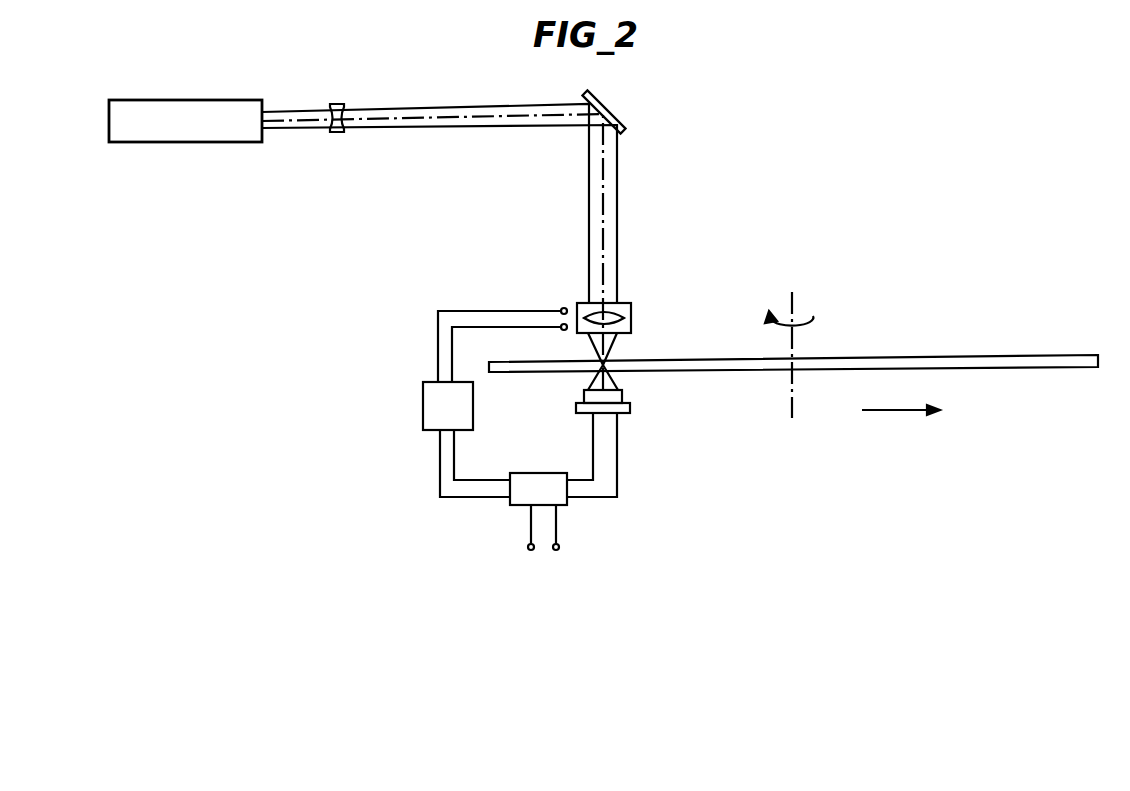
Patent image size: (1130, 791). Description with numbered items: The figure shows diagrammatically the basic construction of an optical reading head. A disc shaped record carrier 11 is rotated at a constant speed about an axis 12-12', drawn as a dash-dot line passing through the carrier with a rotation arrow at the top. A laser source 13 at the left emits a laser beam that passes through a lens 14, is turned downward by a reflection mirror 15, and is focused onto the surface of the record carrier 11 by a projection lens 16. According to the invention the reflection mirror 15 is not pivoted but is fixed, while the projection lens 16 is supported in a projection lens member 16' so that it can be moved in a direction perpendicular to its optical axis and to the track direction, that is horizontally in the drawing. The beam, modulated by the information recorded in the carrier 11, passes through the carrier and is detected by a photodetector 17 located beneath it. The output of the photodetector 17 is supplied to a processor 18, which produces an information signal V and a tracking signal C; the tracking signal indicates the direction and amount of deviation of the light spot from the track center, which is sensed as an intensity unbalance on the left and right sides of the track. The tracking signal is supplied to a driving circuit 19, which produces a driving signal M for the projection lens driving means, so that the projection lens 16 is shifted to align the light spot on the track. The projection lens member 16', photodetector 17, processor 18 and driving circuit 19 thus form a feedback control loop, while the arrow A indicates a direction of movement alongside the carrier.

The disc shaped record carrier 11 is at (957, 355).
The axis of rotation 12 is at (792, 293).
The axis of rotation 12' is at (801, 373).
The laser source 13 is at (232, 77).
The lens 14 is at (345, 98).
The reflection mirror 15 is at (612, 110).
The projection lens 16 is at (586, 293).
The projection lens member 16' is at (623, 293).
The photodetector 17 is at (622, 395).
The processor 18 is at (543, 473).
The driving circuit 19 is at (423, 410).
The driving signal M is at (499, 329).
The tracking signal C is at (455, 463).
The information signal V is at (543, 546).
The direction of movement A is at (912, 410).